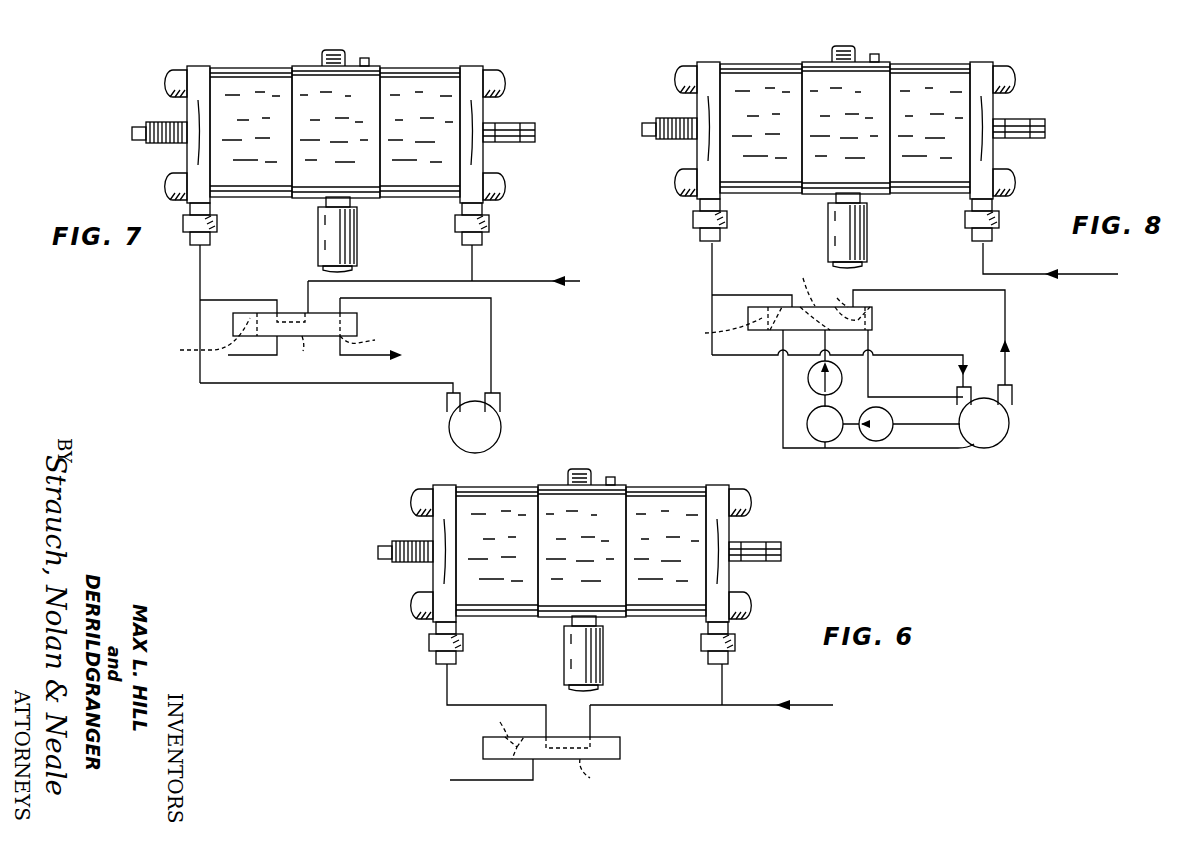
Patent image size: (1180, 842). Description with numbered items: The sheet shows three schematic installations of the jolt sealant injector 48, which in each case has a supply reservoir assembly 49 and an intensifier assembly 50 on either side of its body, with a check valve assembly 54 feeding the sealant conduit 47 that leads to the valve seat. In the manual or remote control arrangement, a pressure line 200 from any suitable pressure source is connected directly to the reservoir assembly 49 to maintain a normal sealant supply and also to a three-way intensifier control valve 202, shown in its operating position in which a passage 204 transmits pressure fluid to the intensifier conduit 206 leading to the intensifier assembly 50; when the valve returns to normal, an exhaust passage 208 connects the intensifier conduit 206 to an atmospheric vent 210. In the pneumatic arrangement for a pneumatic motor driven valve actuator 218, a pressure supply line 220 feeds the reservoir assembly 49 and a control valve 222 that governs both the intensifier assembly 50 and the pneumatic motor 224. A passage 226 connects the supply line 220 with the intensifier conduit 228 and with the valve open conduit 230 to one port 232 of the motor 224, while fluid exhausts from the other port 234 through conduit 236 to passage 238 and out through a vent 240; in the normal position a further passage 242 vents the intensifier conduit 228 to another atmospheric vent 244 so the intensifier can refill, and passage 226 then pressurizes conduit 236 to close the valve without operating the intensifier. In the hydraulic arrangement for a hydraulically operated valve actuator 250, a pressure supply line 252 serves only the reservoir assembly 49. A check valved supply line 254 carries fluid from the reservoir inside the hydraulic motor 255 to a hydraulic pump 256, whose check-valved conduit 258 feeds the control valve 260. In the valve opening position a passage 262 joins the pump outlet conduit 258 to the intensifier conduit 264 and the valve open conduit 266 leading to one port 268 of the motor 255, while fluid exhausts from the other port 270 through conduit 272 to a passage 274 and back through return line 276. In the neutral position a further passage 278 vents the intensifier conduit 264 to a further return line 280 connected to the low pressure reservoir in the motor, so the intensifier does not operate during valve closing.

In FIG. 7, the sealant conduit 47 is at (352, 268).
In FIG. 8, the sealant conduit 47 is at (874, 256).
In FIG. 6, the sealant conduit 47 is at (610, 679).
In FIG. 7, the jolt sealant injector 48 is at (286, 146).
In FIG. 8, the jolt sealant injector 48 is at (887, 142).
In FIG. 6, the jolt sealant injector 48 is at (541, 566).
In FIG. 7, the supply reservoir assembly 49 is at (477, 64).
In FIG. 8, the supply reservoir assembly 49 is at (998, 110).
In FIG. 6, the supply reservoir assembly 49 is at (728, 531).
In FIG. 7, the intensifier assembly 50 is at (191, 63).
In FIG. 8, the intensifier assembly 50 is at (695, 107).
In FIG. 6, the intensifier assembly 50 is at (420, 536).
In FIG. 7, the check valve assembly 54 is at (360, 238).
In FIG. 8, the check valve assembly 54 is at (872, 227).
In FIG. 6, the check valve assembly 54 is at (608, 650).
In FIG. 6, the pressure line 200 is at (800, 705).
In FIG. 6, the three-way intensifier control valve 202 is at (620, 742).
In FIG. 6, the passage 204 is at (605, 775).
In FIG. 6, the intensifier conduit 206 is at (447, 690).
In FIG. 6, the exhaust passage 208 is at (492, 736).
In FIG. 6, the atmospheric vent 210 is at (472, 780).
In FIG. 7, the pneumatic motor driven valve actuator 218 is at (508, 444).
In FIG. 7, the pressure supply line 220 is at (576, 280).
In FIG. 7, the control valve 222 is at (357, 320).
In FIG. 7, the pneumatic motor 224 is at (490, 431).
In FIG. 7, the passage 226 is at (310, 325).
In FIG. 7, the intensifier conduit 228 is at (200, 275).
In FIG. 7, the valve open conduit 230 is at (283, 383).
In FIG. 7, the port 232 is at (447, 395).
In FIG. 7, the port 234 is at (500, 395).
In FIG. 7, the conduit 236 is at (491, 330).
In FIG. 7, the passage 238 is at (378, 339).
In FIG. 7, the vent 240 is at (363, 357).
In FIG. 7, the passage 242 is at (196, 339).
In FIG. 7, the atmospheric vent 244 is at (239, 342).
In FIG. 8, the hydraulically operated valve actuator 250 is at (1018, 442).
In FIG. 8, the pressure supply line 252 is at (1090, 274).
In FIG. 8, the check valved supply line 254 is at (903, 428).
In FIG. 8, the hydraulic motor 255 is at (1002, 426).
In FIG. 8, the hydraulic pump 256 is at (825, 448).
In FIG. 8, the check-valved conduit 258 is at (825, 357).
In FIG. 8, the control valve 260 is at (872, 318).
In FIG. 8, the passage 262 is at (801, 282).
In FIG. 8, the intensifier conduit 264 is at (712, 270).
In FIG. 8, the valve open conduit 266 is at (712, 304).
In FIG. 8, the port 268 is at (957, 388).
In FIG. 8, the port 270 is at (1012, 388).
In FIG. 8, the conduit 272 is at (1005, 318).
In FIG. 8, the passage 274 is at (838, 292).
In FIG. 8, the return line 276 is at (868, 385).
In FIG. 8, the passage 278 is at (713, 331).
In FIG. 8, the return line 280 is at (917, 448).